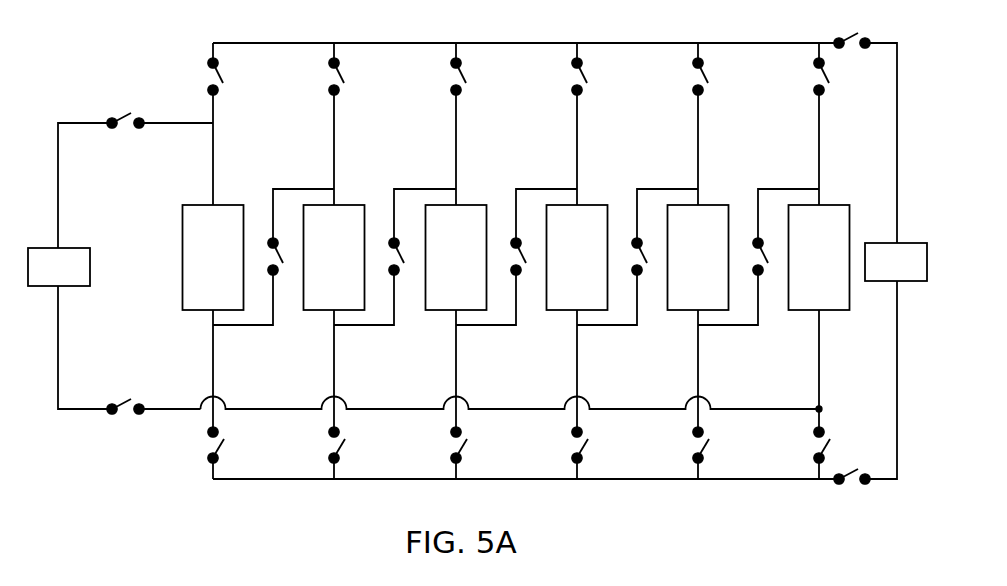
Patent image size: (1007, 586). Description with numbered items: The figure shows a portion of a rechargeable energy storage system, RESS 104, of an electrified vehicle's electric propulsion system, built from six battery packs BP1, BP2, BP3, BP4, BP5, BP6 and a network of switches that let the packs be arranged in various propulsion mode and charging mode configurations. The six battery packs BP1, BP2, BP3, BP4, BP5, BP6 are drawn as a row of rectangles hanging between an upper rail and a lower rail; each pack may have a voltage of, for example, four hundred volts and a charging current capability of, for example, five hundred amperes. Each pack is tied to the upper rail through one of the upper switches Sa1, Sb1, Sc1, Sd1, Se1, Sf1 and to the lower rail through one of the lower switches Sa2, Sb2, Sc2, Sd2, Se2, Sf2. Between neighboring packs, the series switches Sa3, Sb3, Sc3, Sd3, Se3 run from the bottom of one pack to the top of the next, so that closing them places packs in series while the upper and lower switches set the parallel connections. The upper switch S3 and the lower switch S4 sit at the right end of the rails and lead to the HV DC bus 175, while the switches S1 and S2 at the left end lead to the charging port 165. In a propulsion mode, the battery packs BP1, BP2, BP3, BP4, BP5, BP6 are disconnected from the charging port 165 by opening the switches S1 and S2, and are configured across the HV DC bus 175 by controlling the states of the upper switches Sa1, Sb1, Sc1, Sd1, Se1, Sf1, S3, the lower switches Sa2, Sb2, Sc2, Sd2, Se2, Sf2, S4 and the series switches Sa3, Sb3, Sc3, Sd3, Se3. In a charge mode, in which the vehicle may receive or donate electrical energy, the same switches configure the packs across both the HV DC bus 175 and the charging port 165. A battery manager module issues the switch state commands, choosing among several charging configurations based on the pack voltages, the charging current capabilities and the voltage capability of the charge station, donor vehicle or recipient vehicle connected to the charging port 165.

The RESS 104 is at (530, 31).
The charging port 165 is at (47, 278).
The HV DC bus 175 is at (884, 273).
The switch S1 is at (125, 135).
The switch S2 is at (125, 421).
The upper switch S3 is at (852, 54).
The lower switch S4 is at (852, 494).
The upper switch Sa1 is at (200, 76).
The lower switch Sa2 is at (200, 445).
The series switch Sa3 is at (273, 257).
The upper switch Sb1 is at (320, 76).
The lower switch Sb2 is at (321, 445).
The series switch Sb3 is at (395, 257).
The upper switch Sc1 is at (443, 76).
The lower switch Sc2 is at (444, 445).
The series switch Sc3 is at (516, 257).
The upper switch Sd1 is at (563, 76).
The lower switch Sd2 is at (564, 445).
The series switch Sd3 is at (637, 257).
The upper switch Se1 is at (685, 76).
The lower switch Se2 is at (685, 445).
The series switch Se3 is at (758, 257).
The upper switch Sf1 is at (808, 76).
The lower switch Sf2 is at (808, 445).
The battery pack BP1 is at (196, 269).
The battery pack BP2 is at (317, 269).
The battery pack BP3 is at (439, 269).
The battery pack BP4 is at (560, 269).
The battery pack BP5 is at (681, 269).
The battery pack BP6 is at (802, 269).